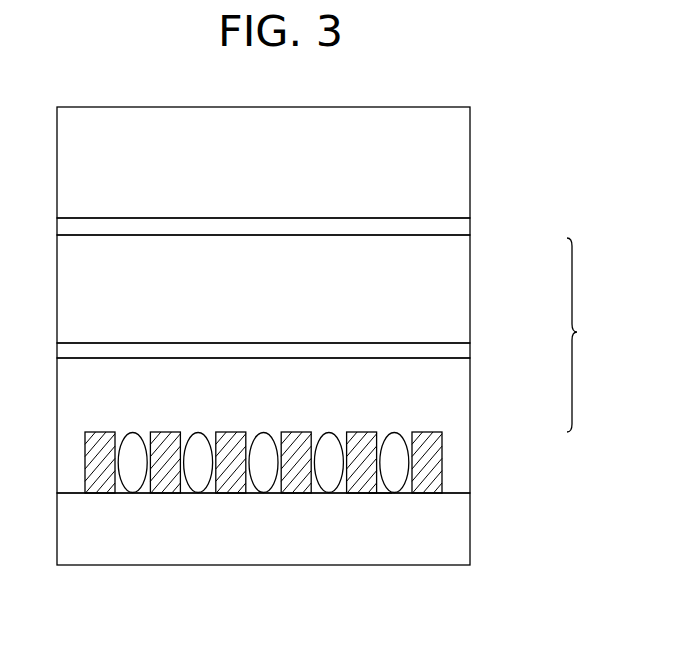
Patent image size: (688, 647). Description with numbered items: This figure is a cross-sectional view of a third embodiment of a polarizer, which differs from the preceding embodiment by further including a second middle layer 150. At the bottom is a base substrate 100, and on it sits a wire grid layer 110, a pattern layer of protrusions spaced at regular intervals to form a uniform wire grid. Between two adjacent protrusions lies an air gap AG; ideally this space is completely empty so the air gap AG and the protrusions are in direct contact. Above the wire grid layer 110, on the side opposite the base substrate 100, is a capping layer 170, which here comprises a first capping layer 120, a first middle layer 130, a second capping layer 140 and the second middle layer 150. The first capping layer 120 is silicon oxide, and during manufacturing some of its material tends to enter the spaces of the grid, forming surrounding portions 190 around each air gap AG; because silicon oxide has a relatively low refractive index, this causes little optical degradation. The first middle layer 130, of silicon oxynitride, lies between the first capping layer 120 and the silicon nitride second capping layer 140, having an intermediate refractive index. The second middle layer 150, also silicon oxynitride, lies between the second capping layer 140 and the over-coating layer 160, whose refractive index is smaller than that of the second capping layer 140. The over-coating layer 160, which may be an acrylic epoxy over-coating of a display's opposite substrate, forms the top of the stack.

The base substrate 100 is at (463, 529).
The wire grid layer 110 is at (440, 477).
The first capping layer 120 is at (463, 391).
The first middle layer 130 is at (463, 349).
The second capping layer 140 is at (463, 295).
The second middle layer 150 is at (463, 224).
The over-coating layer 160 is at (463, 176).
The capping layer 170 is at (593, 335).
The surrounding portions 190 is at (380, 493).
The air gap AG is at (400, 447).